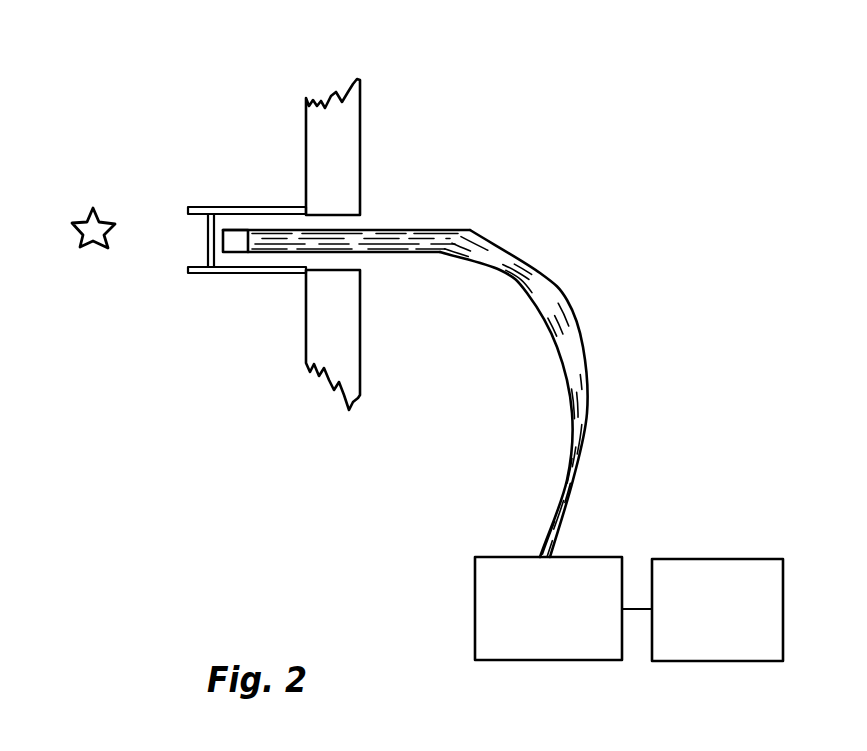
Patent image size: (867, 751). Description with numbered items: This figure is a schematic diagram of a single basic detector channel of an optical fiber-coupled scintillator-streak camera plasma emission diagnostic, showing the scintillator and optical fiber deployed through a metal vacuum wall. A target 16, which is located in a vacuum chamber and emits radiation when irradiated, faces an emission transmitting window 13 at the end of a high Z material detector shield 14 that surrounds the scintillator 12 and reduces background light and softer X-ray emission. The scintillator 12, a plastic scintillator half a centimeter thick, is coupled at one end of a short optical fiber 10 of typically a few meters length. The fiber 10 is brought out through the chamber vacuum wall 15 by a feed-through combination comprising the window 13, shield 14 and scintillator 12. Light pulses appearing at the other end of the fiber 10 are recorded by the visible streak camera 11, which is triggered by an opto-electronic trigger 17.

The optical fiber 10 is at (520, 252).
The visible streak camera 11 is at (547, 662).
The scintillator 12 is at (240, 243).
The emission transmitting window 13 is at (207, 247).
The detector shield 14 is at (256, 206).
The vacuum wall 15 is at (350, 140).
The target 16 is at (84, 237).
The opto-electronic trigger 17 is at (717, 662).